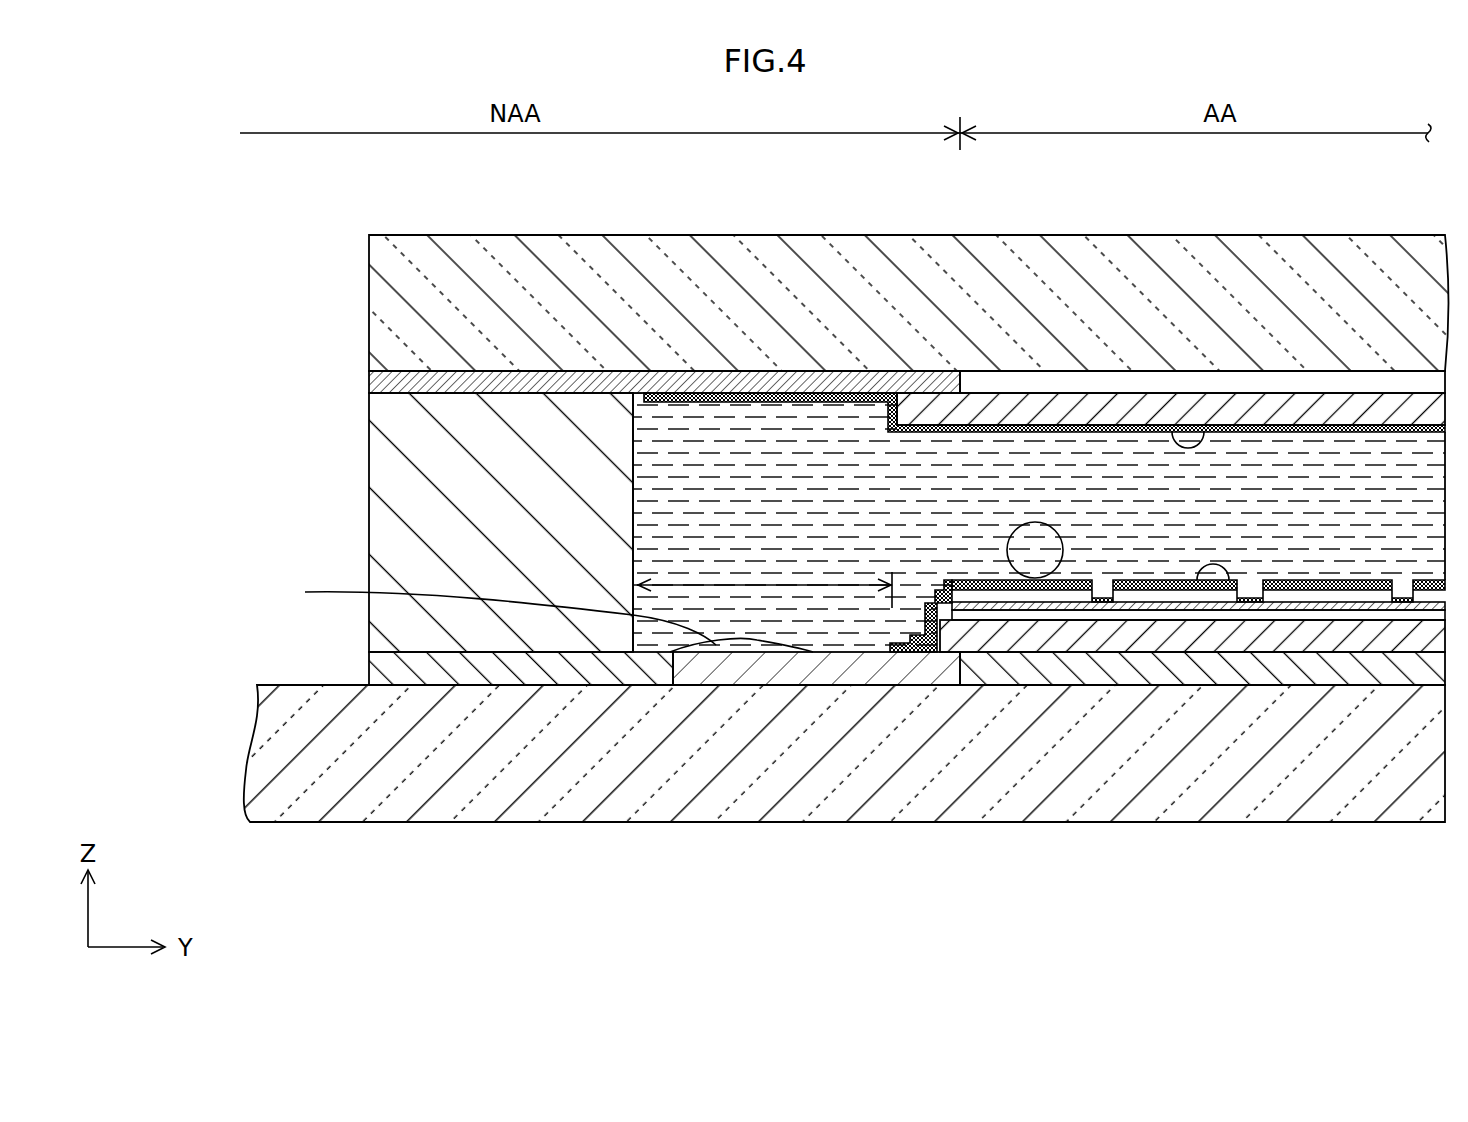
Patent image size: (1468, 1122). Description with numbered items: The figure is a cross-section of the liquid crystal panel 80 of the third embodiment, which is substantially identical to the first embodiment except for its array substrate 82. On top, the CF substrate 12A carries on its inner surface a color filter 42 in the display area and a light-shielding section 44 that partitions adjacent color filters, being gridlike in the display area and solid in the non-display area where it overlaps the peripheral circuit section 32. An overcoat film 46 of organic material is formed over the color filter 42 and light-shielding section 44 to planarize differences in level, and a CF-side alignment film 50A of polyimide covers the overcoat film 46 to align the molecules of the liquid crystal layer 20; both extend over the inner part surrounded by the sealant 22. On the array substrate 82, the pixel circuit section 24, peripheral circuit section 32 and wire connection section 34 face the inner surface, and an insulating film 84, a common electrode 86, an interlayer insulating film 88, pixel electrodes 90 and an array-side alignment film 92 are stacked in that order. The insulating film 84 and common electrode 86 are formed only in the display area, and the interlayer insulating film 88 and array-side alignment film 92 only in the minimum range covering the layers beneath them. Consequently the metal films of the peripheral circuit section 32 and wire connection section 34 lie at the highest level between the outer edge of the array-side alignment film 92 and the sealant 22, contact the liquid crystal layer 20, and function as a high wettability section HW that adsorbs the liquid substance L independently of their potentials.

The liquid crystal panel 80 is at (214, 267).
The CF substrate 12A is at (462, 265).
The light-shielding section 44 is at (800, 383).
The color filter 42 is at (1011, 383).
The overcoat film 46 is at (1078, 405).
The CF-side alignment film 50A is at (1208, 428).
The sealant 22 is at (392, 468).
The liquid crystal layer 20 is at (1362, 455).
The liquid substance L is at (548, 615).
The high wettability section HW is at (764, 582).
The wire connection section 34 is at (578, 672).
The peripheral circuit section 32 is at (735, 665).
The array substrate 82 is at (284, 805).
The insulating film 84 is at (977, 652).
The common electrode 86 is at (1072, 608).
The interlayer insulating film 88 is at (1133, 616).
The pixel electrodes 90 is at (1041, 614).
The array-side alignment film 92 is at (1216, 602).
The pixel circuit section 24 is at (1398, 672).